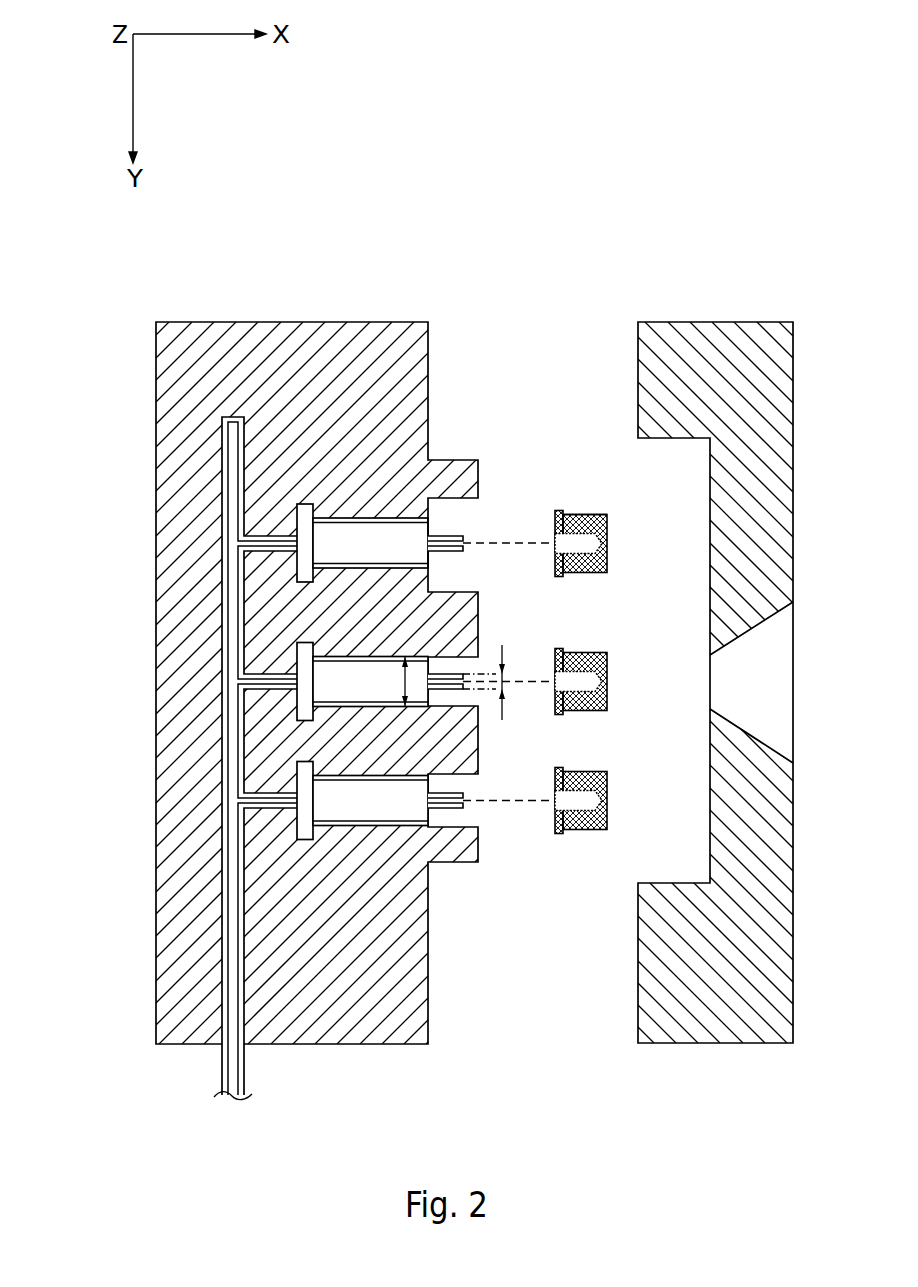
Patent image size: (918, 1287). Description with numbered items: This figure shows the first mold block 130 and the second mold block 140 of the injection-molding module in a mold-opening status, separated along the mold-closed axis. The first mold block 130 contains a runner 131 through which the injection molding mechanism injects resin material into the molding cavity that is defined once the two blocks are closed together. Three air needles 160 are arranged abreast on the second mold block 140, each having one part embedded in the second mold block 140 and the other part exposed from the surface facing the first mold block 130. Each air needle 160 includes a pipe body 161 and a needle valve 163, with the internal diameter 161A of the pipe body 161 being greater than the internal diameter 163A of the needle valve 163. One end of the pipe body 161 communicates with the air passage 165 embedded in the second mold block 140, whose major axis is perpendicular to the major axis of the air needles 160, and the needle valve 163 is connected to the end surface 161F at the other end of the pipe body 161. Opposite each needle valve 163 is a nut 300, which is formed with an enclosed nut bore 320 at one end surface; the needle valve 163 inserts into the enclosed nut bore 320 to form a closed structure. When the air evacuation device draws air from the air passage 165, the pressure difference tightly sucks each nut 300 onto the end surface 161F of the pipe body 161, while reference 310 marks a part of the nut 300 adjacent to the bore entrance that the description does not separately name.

The first mold block 130 is at (754, 682).
The runner 131 is at (768, 670).
The second mold block 140 is at (357, 343).
The air needle 160 is at (432, 673).
The pipe body 161 is at (402, 532).
The internal diameter of the pipe body 161A is at (402, 680).
The end surface of the pipe body 161F is at (428, 560).
The needle valve 163 is at (448, 535).
The internal diameter of the needle valve 163A is at (508, 680).
The air passage 165 is at (233, 457).
The nut 300 is at (562, 644).
The body of fastener 310 is at (554, 523).
The enclosed nut bore 320 is at (550, 549).